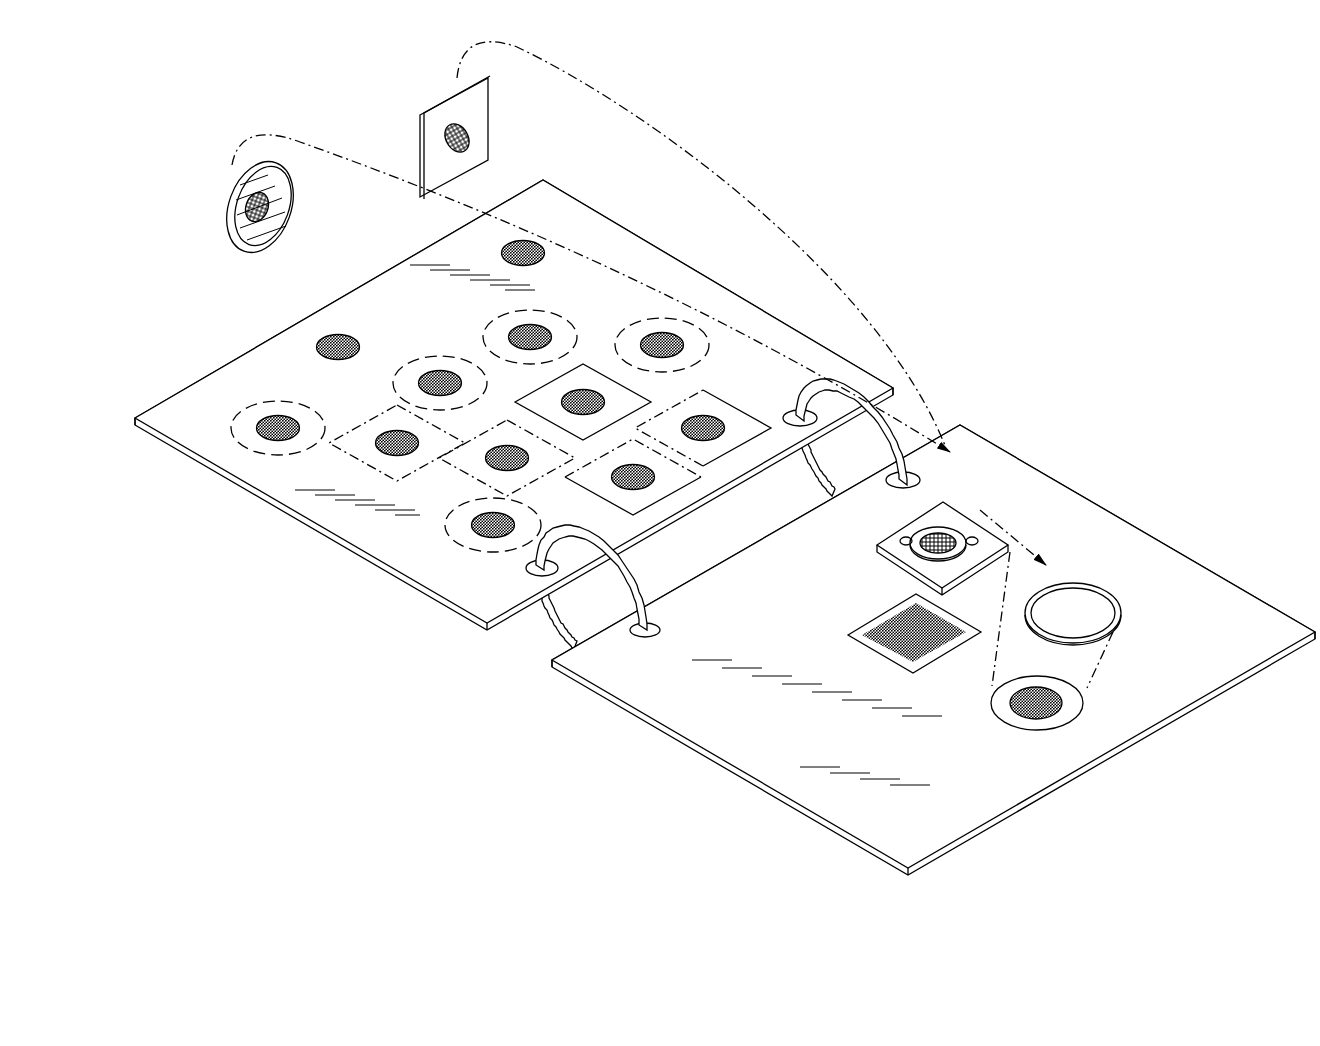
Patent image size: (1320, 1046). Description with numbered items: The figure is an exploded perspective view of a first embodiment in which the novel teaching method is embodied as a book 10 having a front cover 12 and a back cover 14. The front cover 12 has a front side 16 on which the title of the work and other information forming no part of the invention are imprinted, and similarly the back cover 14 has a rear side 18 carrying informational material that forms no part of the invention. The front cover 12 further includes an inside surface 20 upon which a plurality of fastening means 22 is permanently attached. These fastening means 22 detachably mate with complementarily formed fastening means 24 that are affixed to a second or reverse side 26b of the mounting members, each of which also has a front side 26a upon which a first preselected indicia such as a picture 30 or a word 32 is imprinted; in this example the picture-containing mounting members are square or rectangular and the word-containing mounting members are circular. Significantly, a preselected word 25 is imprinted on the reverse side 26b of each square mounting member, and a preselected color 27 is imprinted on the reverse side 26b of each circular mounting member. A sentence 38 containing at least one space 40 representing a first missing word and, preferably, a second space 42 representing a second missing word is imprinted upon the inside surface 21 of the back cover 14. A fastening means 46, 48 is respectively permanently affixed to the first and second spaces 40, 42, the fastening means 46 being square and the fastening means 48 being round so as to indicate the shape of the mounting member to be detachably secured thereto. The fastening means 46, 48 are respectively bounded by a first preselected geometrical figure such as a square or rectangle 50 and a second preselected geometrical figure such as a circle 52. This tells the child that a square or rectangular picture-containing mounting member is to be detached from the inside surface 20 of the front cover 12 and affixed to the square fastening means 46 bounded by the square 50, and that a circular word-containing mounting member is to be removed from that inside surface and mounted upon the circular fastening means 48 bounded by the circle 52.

The book 10 is at (967, 268).
The front cover 12 is at (196, 378).
The back cover 14 is at (1218, 568).
The front side 16 is at (380, 534).
The rear side 18 is at (685, 705).
The inside surface 20 is at (424, 331).
The inside surface 21 is at (850, 763).
The fastening means 22 is at (546, 254).
The complementarily formed fastening means 24 is at (468, 137).
The word 25 is at (492, 100).
The front side 26a is at (432, 108).
The reverse side 26b is at (430, 155).
The preselected color 27 is at (282, 200).
The picture 30 is at (947, 523).
The word 32 is at (1113, 622).
The sentence 38 is at (830, 645).
The first space 40 is at (877, 657).
The second space 42 is at (1035, 735).
The square fastening means 46 is at (873, 613).
The circular fastening means 48 is at (1055, 692).
The square or rectangle 50 is at (926, 662).
The circle 52 is at (1073, 718).